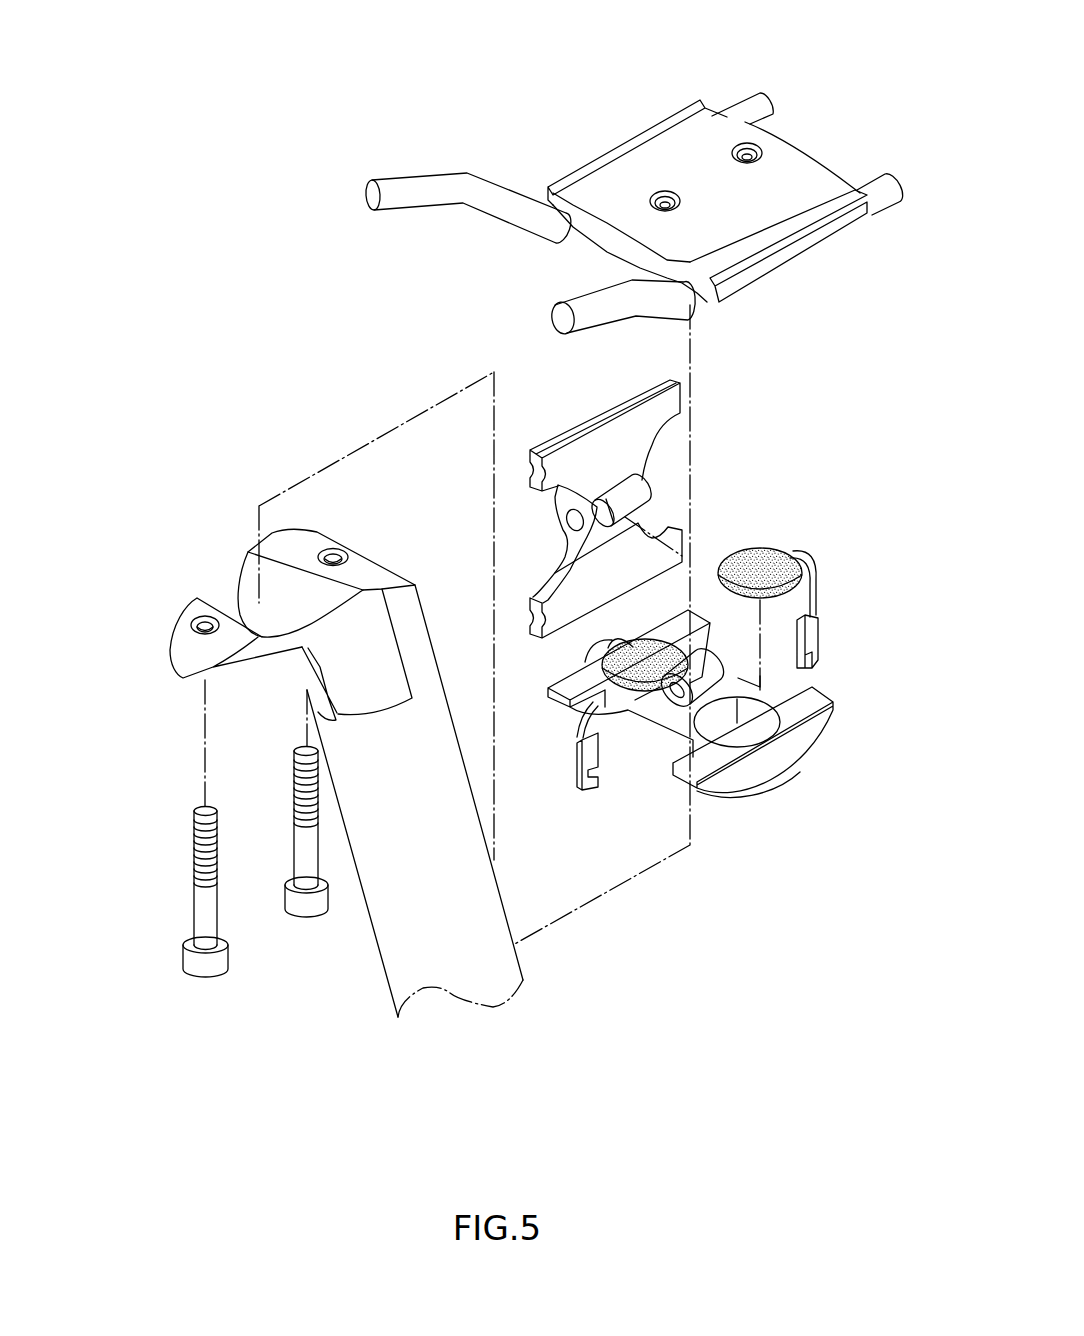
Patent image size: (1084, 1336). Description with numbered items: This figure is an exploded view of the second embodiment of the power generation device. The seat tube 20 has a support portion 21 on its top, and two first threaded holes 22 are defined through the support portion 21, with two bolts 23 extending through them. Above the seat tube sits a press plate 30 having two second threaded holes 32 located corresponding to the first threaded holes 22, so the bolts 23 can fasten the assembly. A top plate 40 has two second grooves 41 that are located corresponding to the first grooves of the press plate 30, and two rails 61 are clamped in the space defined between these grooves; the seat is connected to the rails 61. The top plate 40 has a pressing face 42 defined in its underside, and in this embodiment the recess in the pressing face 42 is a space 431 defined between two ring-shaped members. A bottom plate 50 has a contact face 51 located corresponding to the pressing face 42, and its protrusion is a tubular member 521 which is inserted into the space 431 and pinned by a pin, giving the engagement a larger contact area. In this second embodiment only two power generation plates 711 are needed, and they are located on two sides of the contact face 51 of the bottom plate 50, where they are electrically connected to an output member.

The seat tube 20 is at (390, 947).
The support portion 21 is at (238, 595).
The first threaded holes 22 is at (193, 608).
The bolts 23 is at (193, 963).
The press plate 30 is at (690, 163).
The second threaded holes 32 is at (660, 197).
The top plate 40 is at (550, 547).
The second grooves 41 is at (530, 467).
The pressing face 42 is at (613, 440).
The space 431 is at (622, 498).
The bottom plate 50 is at (727, 732).
The contact face 51 is at (793, 713).
The tubular member 521 is at (670, 702).
The rails 61 is at (753, 107).
The power generation plates 711 is at (775, 562).